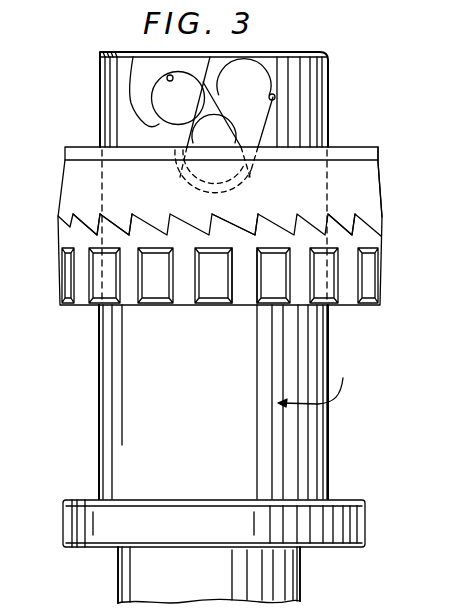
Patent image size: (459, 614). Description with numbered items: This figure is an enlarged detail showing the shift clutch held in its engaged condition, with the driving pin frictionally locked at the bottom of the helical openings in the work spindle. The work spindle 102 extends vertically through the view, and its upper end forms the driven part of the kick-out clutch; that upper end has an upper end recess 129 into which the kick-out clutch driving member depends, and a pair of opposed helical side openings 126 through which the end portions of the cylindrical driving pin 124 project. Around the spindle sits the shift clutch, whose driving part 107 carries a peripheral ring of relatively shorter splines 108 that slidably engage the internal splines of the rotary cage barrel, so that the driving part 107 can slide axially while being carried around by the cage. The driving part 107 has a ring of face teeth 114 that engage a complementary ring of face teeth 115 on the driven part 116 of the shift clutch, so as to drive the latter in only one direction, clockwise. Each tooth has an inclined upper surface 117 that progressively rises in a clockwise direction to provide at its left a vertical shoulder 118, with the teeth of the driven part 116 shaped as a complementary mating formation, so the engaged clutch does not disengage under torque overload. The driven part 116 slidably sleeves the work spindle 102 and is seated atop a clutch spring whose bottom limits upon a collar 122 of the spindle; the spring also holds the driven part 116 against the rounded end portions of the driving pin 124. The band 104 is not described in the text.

The work spindle 102 is at (210, 427).
The ratchet band / collar 104 is at (210, 227).
The driving part of the shift clutch 107 is at (243, 306).
The splines 108 is at (163, 306).
The face teeth 114 is at (340, 222).
The face teeth 115 is at (233, 222).
The driven part of the shift clutch 116 is at (380, 150).
The inclined upper surface 117 is at (131, 218).
The vertical shoulder 118 is at (99, 218).
The collar 122 is at (76, 499).
The driving pin 124 is at (232, 137).
The helical side openings 126 is at (292, 84).
The upper end recess 129 is at (140, 60).